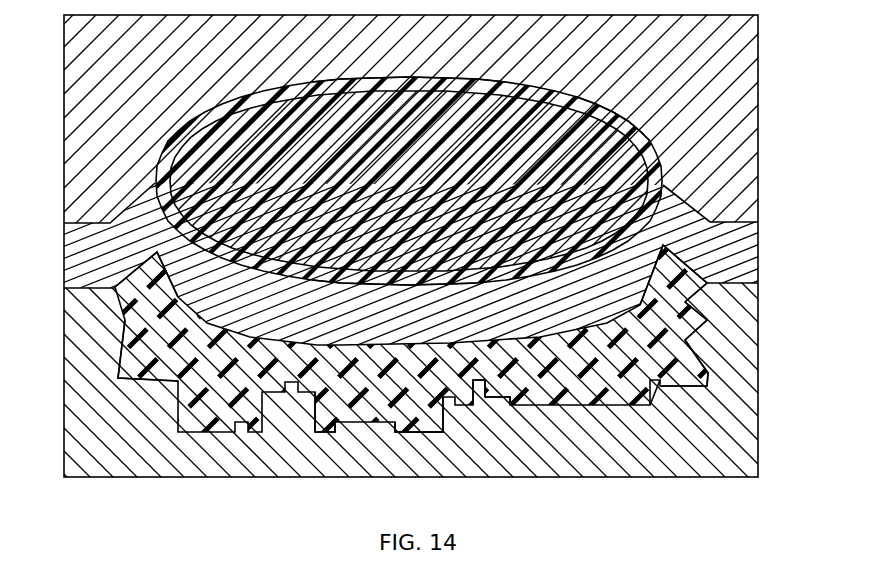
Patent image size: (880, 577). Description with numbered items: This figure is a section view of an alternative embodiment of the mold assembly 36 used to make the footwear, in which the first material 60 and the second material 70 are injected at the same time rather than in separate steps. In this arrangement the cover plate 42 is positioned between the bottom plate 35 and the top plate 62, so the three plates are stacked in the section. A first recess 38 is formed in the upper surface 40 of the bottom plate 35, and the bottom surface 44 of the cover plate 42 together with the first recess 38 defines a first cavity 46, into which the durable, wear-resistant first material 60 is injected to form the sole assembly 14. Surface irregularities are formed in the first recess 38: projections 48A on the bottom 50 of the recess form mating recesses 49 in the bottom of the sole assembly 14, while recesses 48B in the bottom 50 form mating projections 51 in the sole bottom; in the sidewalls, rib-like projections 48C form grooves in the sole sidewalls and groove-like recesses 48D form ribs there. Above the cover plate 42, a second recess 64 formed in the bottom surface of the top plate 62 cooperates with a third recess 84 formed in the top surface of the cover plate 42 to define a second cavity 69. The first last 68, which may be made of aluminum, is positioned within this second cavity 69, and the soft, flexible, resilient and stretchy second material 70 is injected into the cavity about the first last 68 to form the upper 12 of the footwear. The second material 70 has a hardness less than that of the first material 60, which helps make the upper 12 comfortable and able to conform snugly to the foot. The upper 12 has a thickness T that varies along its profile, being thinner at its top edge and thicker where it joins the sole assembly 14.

The upper 12 is at (210, 110).
The sole assembly 14 is at (678, 383).
The bottom plate 35 is at (752, 431).
The mold assembly 36 is at (810, 192).
The first recess 38 is at (592, 406).
The upper surface 40 is at (82, 287).
The cover plate 42 is at (752, 248).
The bottom surface 44 is at (418, 340).
The first cavity 46 is at (650, 293).
The projections 48A is at (454, 393).
The recesses 48B is at (328, 430).
The projections 48C is at (146, 292).
The recesses 48D is at (125, 370).
The mating recesses 49 is at (481, 396).
The bottom 50 is at (572, 404).
The mating projections 51 is at (410, 430).
The first material 60 is at (667, 330).
The top plate 62 is at (748, 39).
The second recess 64 is at (542, 85).
The first last 68 is at (210, 147).
The second cavity 69 is at (616, 106).
The second material 70 is at (317, 81).
The third recess 84 is at (347, 264).
The thickness T is at (483, 142).